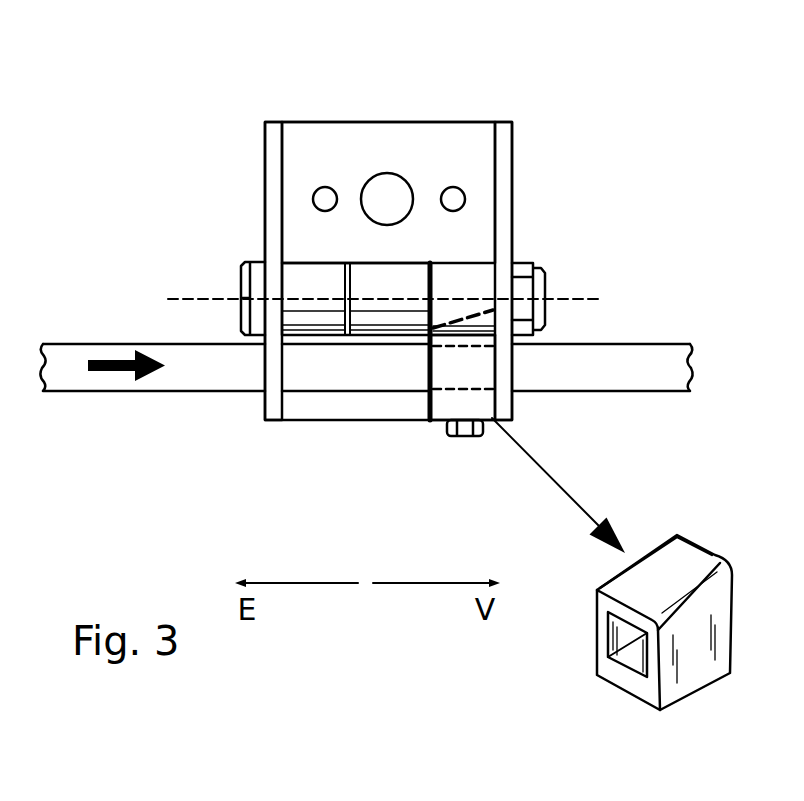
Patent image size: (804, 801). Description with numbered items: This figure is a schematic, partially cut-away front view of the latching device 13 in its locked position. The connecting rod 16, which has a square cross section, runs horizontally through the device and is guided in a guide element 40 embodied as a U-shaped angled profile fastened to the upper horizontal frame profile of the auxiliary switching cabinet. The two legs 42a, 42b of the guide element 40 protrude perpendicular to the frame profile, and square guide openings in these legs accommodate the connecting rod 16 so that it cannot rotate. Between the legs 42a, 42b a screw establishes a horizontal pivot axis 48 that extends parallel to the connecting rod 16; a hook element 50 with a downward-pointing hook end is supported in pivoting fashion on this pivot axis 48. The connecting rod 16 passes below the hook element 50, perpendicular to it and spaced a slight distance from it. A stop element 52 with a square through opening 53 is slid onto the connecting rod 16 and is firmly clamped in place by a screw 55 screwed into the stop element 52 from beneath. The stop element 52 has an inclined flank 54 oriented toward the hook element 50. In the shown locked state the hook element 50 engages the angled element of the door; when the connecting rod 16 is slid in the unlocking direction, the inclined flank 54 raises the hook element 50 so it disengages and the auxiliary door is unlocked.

The guide assembly 13 is at (240, 113).
The connecting rod 16 is at (221, 374).
The guide element 40 is at (395, 150).
The leg of the U-shaped guide element 42a is at (272, 220).
The leg of the U-shaped guide element 42b is at (502, 202).
The pivot axis 48 is at (562, 298).
The hook element 50 is at (377, 305).
The stop element 52 is at (465, 358).
The square through opening 53 is at (627, 655).
The inclined flank 54 is at (463, 322).
The screw 55 is at (465, 437).